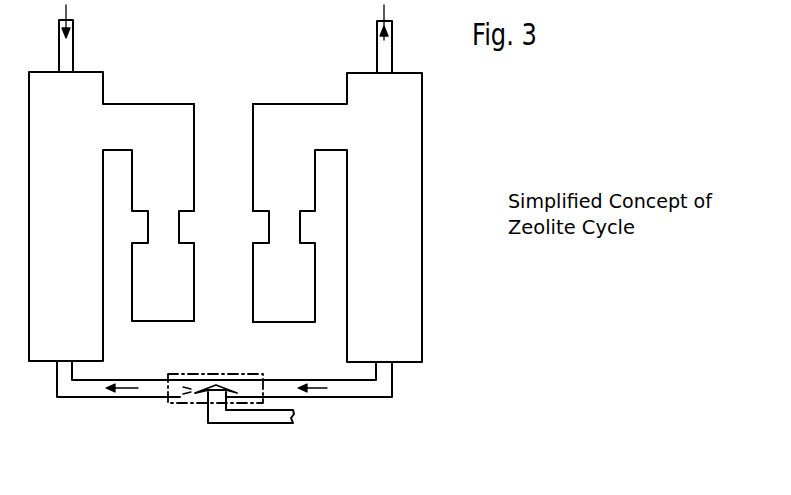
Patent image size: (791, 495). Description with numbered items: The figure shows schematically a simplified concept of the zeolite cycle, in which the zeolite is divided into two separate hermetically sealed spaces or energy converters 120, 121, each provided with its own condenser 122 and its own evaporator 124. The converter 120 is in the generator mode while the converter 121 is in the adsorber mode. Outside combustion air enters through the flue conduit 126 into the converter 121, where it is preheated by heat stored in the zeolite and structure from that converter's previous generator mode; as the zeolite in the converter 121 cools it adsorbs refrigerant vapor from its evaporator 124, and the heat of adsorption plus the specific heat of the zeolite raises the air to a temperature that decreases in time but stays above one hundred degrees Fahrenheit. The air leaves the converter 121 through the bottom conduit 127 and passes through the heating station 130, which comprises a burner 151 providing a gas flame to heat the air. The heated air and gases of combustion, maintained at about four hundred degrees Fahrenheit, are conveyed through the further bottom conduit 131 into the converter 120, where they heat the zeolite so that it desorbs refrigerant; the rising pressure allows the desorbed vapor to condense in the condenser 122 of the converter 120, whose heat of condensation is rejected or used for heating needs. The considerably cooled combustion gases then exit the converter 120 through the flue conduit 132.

The converter 120 is at (128, 104).
The converter 121 is at (300, 104).
The condenser 122 is at (250, 181).
The evaporator 124 is at (250, 296).
The flue conduit 126 is at (377, 47).
The bottom conduit 127 is at (358, 397).
The heating station 130 is at (200, 374).
The bottom conduit 131 is at (118, 397).
The flue conduit 132 is at (73, 50).
The burner 151 is at (208, 414).